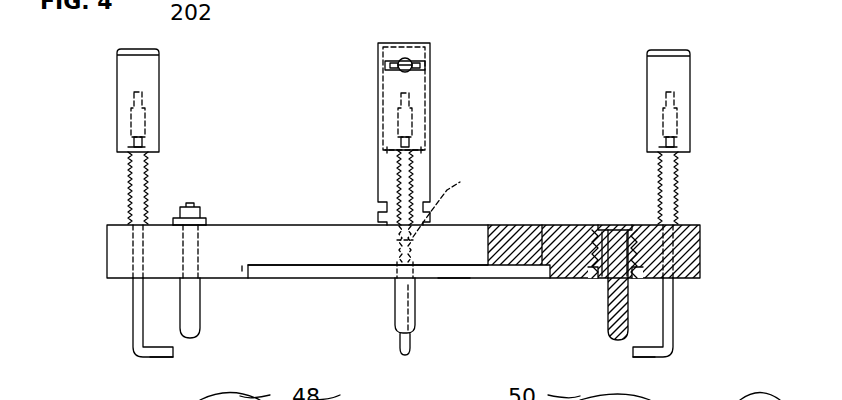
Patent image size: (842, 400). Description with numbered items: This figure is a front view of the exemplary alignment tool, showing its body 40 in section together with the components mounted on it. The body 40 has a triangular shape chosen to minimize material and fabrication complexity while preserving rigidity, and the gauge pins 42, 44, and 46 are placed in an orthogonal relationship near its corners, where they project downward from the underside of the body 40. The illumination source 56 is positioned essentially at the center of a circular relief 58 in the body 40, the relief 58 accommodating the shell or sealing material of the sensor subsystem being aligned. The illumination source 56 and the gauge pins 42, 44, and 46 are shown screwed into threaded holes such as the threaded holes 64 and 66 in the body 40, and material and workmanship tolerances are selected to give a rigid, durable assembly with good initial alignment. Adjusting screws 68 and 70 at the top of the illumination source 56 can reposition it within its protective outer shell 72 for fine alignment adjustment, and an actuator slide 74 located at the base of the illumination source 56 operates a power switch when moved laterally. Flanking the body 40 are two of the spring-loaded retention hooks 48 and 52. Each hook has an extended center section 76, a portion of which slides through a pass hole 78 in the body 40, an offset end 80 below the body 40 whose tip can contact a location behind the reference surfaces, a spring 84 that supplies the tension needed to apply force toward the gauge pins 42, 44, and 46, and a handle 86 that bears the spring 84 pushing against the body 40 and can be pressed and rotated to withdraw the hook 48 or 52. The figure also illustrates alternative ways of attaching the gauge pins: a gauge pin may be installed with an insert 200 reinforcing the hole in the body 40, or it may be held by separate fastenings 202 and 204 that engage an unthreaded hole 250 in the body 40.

The body 40 is at (700, 250).
The gauge pin 42 is at (200, 318).
The gauge pin 44 is at (395, 310).
The gauge pin 46 is at (607, 308).
The spring-loaded retention hook 48 is at (396, 210).
The spring-loaded retention hook 52 is at (687, 43).
The illumination source 56 is at (405, 186).
The circular relief 58 is at (438, 284).
The threaded hole 64 is at (602, 227).
The threaded hole 66 is at (455, 201).
The adjusting screw 68 is at (385, 65).
The adjusting screw 70 is at (425, 68).
The protective outer shell 72 is at (378, 120).
The actuator slide 74 is at (377, 215).
The extended center section 76 is at (133, 307).
The pass hole 78 is at (157, 225).
The offset end 80 is at (157, 358).
The spring 84 is at (128, 182).
The handle 86 is at (117, 103).
The insert 200 is at (598, 250).
The fastening 202 is at (200, 218).
The fastening 204 is at (213, 222).
The unthreaded hole 250 is at (200, 243).